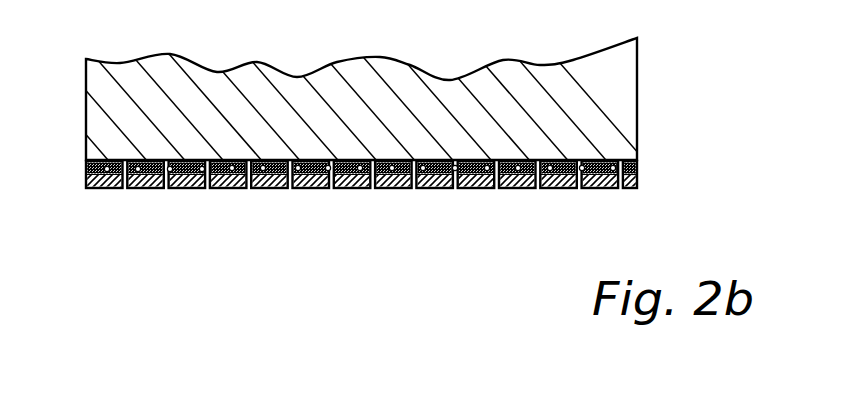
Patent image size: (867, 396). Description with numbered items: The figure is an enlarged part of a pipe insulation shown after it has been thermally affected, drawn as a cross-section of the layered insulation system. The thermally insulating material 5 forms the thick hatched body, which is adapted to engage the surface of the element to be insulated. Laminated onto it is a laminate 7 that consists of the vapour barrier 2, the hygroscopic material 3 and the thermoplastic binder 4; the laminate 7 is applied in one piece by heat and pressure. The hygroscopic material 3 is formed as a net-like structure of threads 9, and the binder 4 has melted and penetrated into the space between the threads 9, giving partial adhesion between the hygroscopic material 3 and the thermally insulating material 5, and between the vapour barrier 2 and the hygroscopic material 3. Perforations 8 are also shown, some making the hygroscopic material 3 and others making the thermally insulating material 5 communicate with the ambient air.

The thermally insulating material 5 is at (622, 73).
The perforations 8 is at (206, 189).
The hygroscopic material 3 is at (262, 189).
The threads 9 is at (298, 189).
The vapour barrier 2 is at (358, 189).
The thermoplastic binder 4 is at (503, 188).
The laminate 7 is at (562, 188).